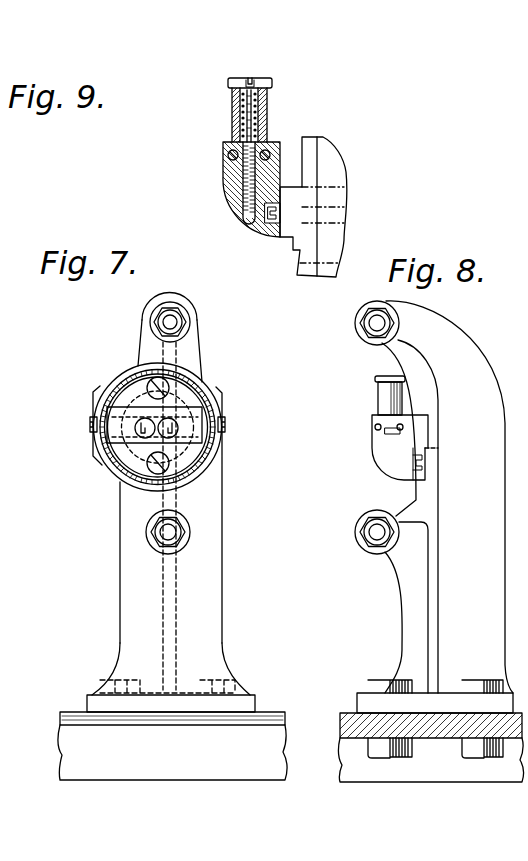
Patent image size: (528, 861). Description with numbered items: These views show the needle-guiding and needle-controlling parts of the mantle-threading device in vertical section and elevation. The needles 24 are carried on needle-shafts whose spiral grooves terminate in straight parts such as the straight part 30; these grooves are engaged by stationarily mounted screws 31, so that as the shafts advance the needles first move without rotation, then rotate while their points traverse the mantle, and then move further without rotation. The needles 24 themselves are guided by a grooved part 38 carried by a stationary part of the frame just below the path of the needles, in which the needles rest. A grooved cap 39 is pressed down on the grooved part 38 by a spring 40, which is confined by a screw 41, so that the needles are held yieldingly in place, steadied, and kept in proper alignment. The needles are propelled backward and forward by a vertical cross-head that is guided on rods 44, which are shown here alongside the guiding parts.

In FIG. 9, the needles 24 is at (226, 152).
In FIG. 8, the needles 24 is at (403, 424).
In FIG. 7, the straight part of spiral groove 30 is at (166, 429).
In FIG. 7, the screws 31 is at (90, 431).
In FIG. 9, the grooved part 38 is at (238, 192).
In FIG. 8, the grooved part 38 is at (388, 450).
In FIG. 9, the grooved cap 39 is at (235, 108).
In FIG. 8, the grooved cap 39 is at (380, 403).
In FIG. 9, the spring 40 is at (258, 118).
In FIG. 9, the screw 41 is at (251, 82).
In FIG. 8, the screw 41 is at (388, 374).
In FIG. 7, the rods 44 is at (178, 321).
In FIG. 8, the rods 44 is at (273, 312).